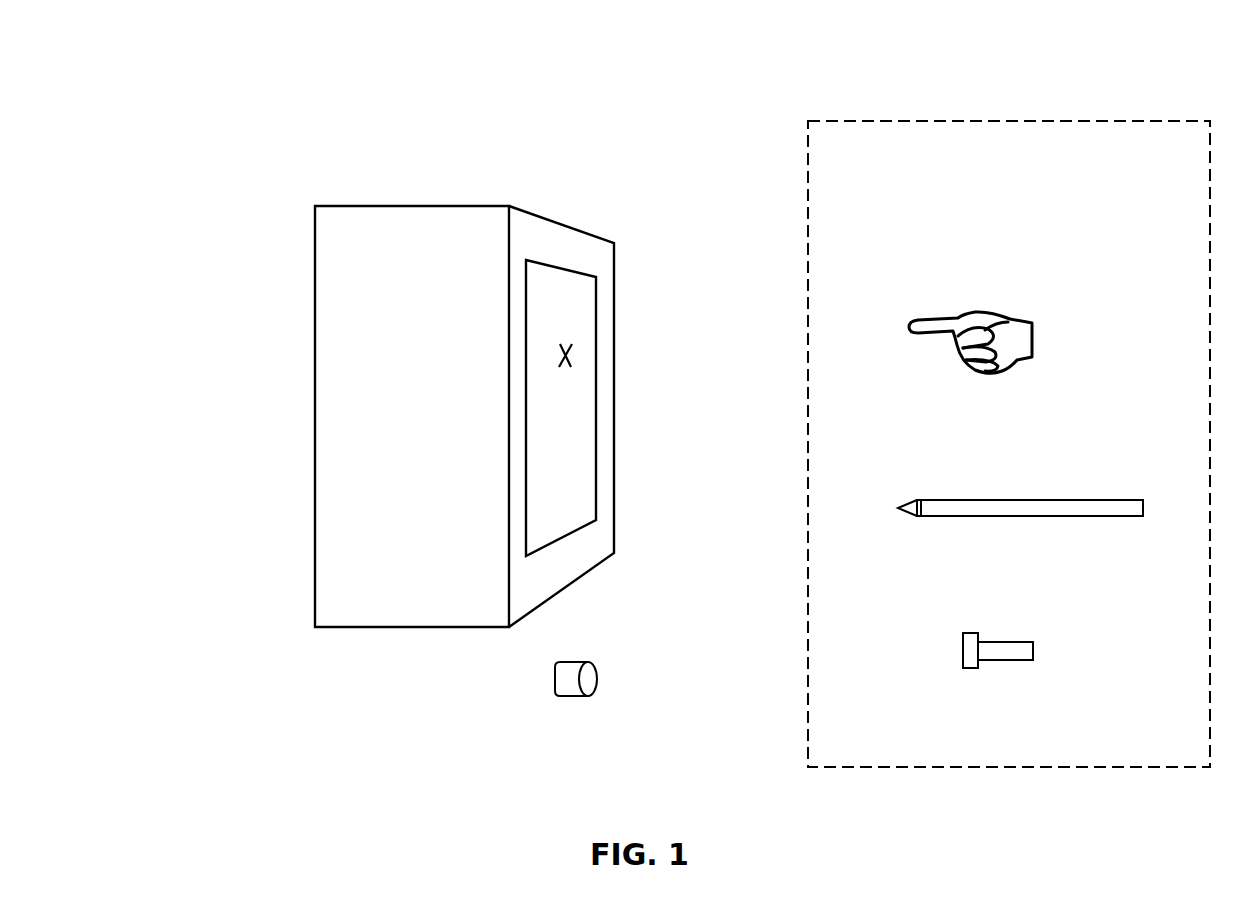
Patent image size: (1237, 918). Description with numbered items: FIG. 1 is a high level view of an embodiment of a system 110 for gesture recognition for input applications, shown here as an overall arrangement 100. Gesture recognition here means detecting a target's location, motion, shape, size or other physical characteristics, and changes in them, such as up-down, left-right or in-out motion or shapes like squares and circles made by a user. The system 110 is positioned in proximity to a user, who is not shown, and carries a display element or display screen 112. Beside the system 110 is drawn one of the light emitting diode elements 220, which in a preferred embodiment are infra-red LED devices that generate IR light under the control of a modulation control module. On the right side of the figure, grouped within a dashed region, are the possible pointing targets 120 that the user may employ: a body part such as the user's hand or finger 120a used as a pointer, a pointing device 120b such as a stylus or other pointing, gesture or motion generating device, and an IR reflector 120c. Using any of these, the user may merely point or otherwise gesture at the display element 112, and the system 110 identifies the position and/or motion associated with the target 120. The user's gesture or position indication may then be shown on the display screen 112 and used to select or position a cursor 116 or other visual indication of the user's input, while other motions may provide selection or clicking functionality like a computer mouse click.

The system 100 is at (272, 138).
The system 110 is at (362, 619).
The display element 112 is at (553, 545).
The cursor 116 is at (579, 347).
The light emitting diode element 220 is at (551, 681).
The target 120 is at (1009, 444).
The hand or finger 120a is at (1003, 319).
The pointing device 120b is at (1027, 500).
The IR reflector 120c is at (1012, 642).